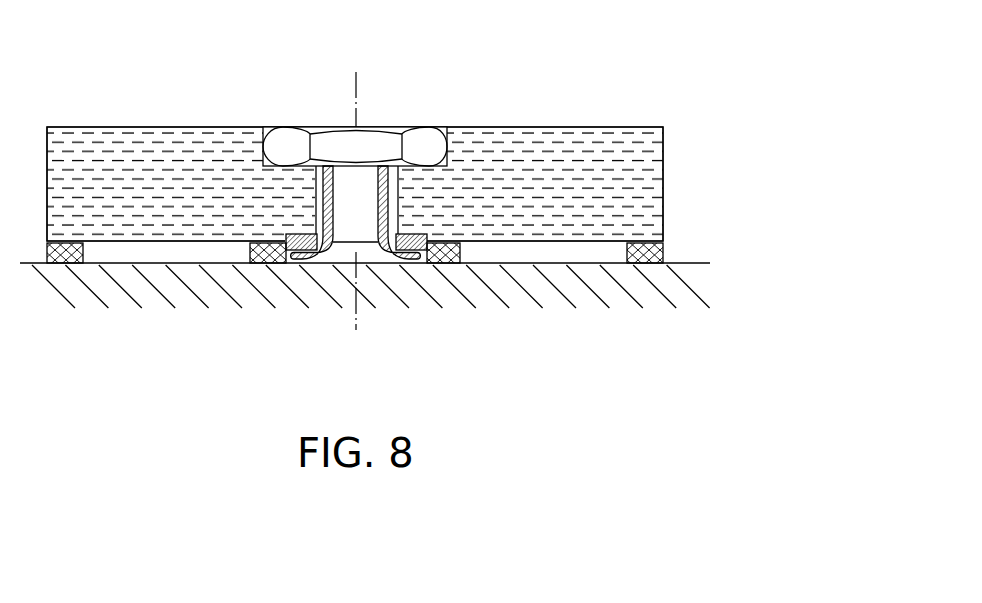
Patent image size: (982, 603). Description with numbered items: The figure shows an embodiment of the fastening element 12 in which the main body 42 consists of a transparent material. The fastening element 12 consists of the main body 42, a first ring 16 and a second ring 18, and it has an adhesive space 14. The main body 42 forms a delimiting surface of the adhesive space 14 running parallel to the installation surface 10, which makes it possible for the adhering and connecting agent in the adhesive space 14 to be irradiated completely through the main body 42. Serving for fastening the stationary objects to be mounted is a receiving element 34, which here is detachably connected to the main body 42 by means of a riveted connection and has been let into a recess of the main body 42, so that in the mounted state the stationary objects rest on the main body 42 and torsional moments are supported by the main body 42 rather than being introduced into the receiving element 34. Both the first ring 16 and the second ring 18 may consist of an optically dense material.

The installation surface 10 is at (685, 264).
The fastening element 12 is at (668, 152).
The adhesive space 14 is at (546, 253).
The first ring 16 is at (67, 253).
The second ring 18 is at (267, 253).
The receiving element 34 is at (392, 145).
The main body 42 is at (166, 158).